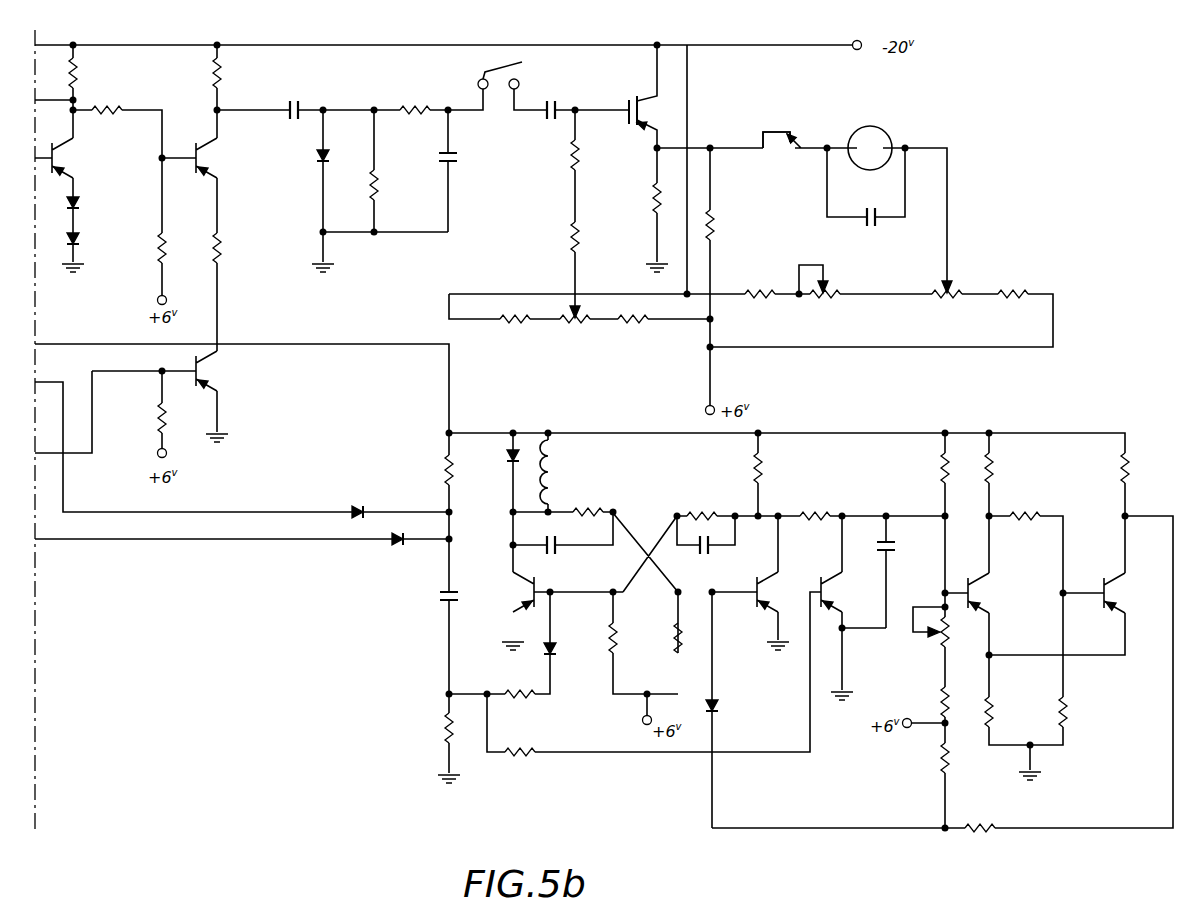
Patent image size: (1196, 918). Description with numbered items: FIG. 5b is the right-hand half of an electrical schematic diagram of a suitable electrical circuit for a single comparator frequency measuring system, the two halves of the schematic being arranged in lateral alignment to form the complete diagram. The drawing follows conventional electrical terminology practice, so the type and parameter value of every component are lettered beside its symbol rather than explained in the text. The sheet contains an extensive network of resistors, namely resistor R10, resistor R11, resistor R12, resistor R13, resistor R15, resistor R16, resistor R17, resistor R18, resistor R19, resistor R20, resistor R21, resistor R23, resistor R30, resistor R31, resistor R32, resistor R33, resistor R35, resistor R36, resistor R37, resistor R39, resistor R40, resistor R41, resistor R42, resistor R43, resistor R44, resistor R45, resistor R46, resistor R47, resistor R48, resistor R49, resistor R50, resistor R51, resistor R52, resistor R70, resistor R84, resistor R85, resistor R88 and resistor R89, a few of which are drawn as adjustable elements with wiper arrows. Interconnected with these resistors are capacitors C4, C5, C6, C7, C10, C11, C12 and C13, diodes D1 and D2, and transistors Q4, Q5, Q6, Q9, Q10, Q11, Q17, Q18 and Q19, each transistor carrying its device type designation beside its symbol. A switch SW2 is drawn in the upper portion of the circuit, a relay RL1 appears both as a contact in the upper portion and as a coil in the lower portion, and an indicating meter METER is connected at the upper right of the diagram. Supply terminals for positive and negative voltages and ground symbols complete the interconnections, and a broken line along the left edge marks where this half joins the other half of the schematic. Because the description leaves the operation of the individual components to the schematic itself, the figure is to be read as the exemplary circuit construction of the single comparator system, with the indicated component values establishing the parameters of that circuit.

The resistor R10 6.3K R10 is at (94, 70).
The resistor R11 47K R11 is at (107, 129).
The resistor R12 47K R12 is at (181, 246).
The resistor R13 1.5K R13 is at (198, 70).
The resistor R15 22 ohm R15 is at (237, 246).
The resistor R16 47K R16 is at (141, 420).
The resistor R17 100K R17 is at (396, 195).
The resistor R18 22K R18 is at (410, 92).
The resistor R19 4.7K R19 is at (511, 339).
The resistor R20 4.7K R20 is at (630, 339).
The resistor R21 22K R21 is at (638, 200).
The resistor R23 47K R23 is at (730, 223).
The resistor R30 22K R30 is at (427, 470).
The resistor R31 100K R31 is at (424, 729).
The resistor R32 47K R32 is at (923, 467).
The potentiometer R33 100K R33 is at (920, 646).
The resistor R35 68K R35 is at (1021, 537).
The resistor R36 47K R36 is at (516, 777).
The resistor R37 10K R37 is at (1010, 467).
The resistor R39 6.8K R39 is at (1145, 467).
The resistor R40 680 ohm R40 is at (1013, 707).
The resistor R41 22K R41 is at (1082, 707).
The resistor R42 2.2K R42 is at (758, 313).
The potentiometer R43 100 ohm R43 is at (830, 313).
The potentiometer R44 20K R44 is at (944, 313).
The resistor R45 2.2K R45 is at (1009, 313).
The resistors R46 (20K potentiometer / 47K) R46 is at (544, 526).
The resistor R47 27K R47 is at (586, 516).
The resistor R48 47K R48 is at (631, 637).
The resistor R49 27K R49 is at (709, 506).
The resistor R50 47K R50 is at (694, 637).
The resistor R51 1200 ohm R51 is at (787, 468).
The resistor R52 33K R52 is at (810, 537).
The resistor R70 47K R70 is at (979, 807).
The resistor R84 2.2K R84 is at (921, 697).
The resistor R85 47K R85 is at (919, 763).
The resistor R88 10 MEG R88 is at (553, 152).
The resistor R89 22 ohm R89 is at (552, 235).
The capacitor C4 12 Mfd C4 is at (300, 93).
The capacitor C5 .12 Mfd C5 is at (478, 172).
The capacitor C6 .03 Mfd C6 is at (564, 93).
The capacitor C7 100 Mfd C7 is at (885, 233).
The capacitor C10 .02 Mfd C10 is at (420, 607).
The capacitor C11 200 pF C11 is at (575, 561).
The capacitor C12 200 pF C12 is at (706, 563).
The capacitor C13 50 Mfd 6WV C13 is at (915, 559).
The diode D1 is at (88, 201).
The diode D2 is at (89, 241).
The transistor Q4 2N408 Q4 is at (92, 163).
The transistor Q5 2N408 Q5 is at (236, 158).
The transistor Q6 2N404 Q6 is at (237, 372).
The field effect transistor Q9 U149 Siliconix Q9 is at (620, 138).
The transistor Q10 2N404 Q10 is at (498, 590).
The transistor Q11 2N404 Q11 is at (748, 604).
The transistor Q17 2N404 Q17 is at (1004, 591).
The transistor Q18 2N404 Q18 is at (1137, 591).
The transistor Q19 2N408 Q19 is at (858, 593).
The switch SW2 is at (496, 68).
The relay RL1 (coil and contact) RL1 is at (666, 318).
The meter M METER is at (875, 136).